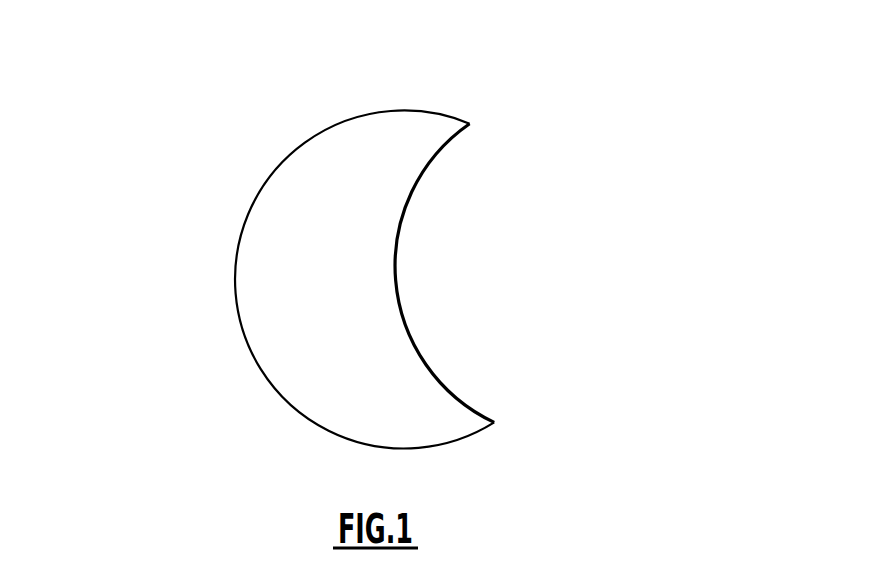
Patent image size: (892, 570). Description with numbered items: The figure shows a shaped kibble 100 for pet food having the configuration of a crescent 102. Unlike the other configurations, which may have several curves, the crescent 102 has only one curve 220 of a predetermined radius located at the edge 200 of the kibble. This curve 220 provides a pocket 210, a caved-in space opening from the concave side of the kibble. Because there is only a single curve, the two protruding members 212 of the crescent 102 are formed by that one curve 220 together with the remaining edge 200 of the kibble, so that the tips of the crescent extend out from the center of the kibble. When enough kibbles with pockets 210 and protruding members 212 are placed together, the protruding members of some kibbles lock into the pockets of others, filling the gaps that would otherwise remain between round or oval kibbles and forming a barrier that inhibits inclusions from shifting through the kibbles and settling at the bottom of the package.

The shaped kibble 100 is at (156, 373).
The crescent 102 is at (431, 74).
The edge 200 is at (473, 405).
The pocket 210 is at (508, 286).
The protruding member 212 is at (470, 124).
The curve 220 is at (402, 223).